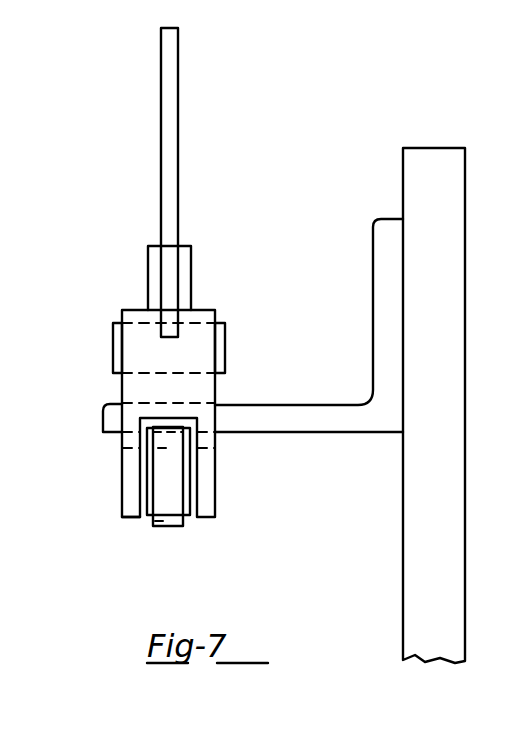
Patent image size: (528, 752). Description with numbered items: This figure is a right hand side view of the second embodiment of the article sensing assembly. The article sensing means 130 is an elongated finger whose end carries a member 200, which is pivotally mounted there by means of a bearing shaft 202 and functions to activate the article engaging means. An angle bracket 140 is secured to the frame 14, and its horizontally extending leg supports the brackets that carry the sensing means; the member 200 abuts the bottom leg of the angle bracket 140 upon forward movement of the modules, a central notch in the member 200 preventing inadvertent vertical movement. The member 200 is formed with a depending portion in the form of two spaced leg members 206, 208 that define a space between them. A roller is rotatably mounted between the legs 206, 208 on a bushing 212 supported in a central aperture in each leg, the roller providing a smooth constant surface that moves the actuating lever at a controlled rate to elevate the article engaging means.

The frame 14 is at (452, 337).
The article sensing means 130 is at (161, 195).
The angle bracket 140 is at (377, 306).
The member 200 is at (137, 311).
The bearing shaft 202 is at (113, 357).
The leg member 206 is at (122, 470).
The leg member 208 is at (207, 490).
The bushing 212 is at (137, 512).